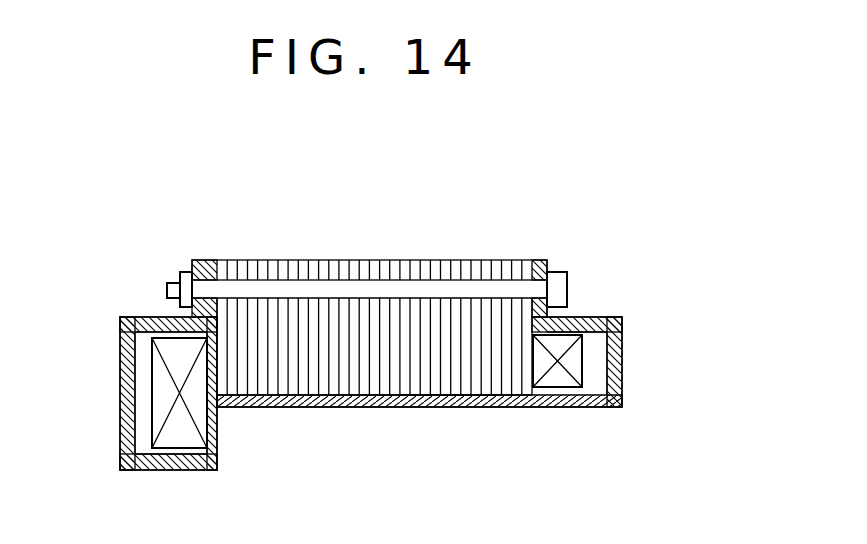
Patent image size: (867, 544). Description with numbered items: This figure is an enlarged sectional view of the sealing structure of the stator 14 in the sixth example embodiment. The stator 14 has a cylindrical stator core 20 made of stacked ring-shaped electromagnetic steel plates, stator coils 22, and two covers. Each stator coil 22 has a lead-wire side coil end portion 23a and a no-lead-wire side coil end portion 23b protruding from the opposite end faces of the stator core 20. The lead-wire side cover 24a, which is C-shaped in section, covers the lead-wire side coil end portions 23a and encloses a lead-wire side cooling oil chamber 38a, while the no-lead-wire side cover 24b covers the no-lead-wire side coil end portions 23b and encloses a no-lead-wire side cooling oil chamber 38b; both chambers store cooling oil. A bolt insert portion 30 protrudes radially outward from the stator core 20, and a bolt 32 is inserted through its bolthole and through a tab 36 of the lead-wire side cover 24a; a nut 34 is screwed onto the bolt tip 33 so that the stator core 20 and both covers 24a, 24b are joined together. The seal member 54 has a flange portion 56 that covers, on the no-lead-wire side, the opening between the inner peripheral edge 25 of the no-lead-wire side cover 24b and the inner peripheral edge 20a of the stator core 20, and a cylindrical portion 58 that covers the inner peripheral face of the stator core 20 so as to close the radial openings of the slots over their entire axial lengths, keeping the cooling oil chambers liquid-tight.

The stator 14 is at (660, 333).
The stator core 20 is at (383, 260).
The inner peripheral edge of the stator core 20a is at (220, 403).
The stator coil 22 is at (588, 328).
The lead-wire side coil end portion 23a is at (622, 394).
The no-lead-wire side coil end portion 23b is at (158, 400).
The lead-wire side cover 24a is at (626, 323).
The no-lead-wire side cover 24b is at (120, 328).
The inner peripheral edge of the no-lead-wire side cover 25 is at (210, 468).
The bolt insert portion 30 is at (320, 260).
The bolt 32 is at (557, 272).
The bolt tip 33 is at (173, 284).
The nut 34 is at (187, 272).
The tab 36 is at (207, 268).
The lead-wire side cooling oil chamber 38a is at (622, 367).
The no-lead-wire side cooling oil chamber 38b is at (133, 360).
The seal member 54 is at (468, 410).
The flange portion 56 is at (220, 450).
The cylindrical portion 58 is at (400, 410).